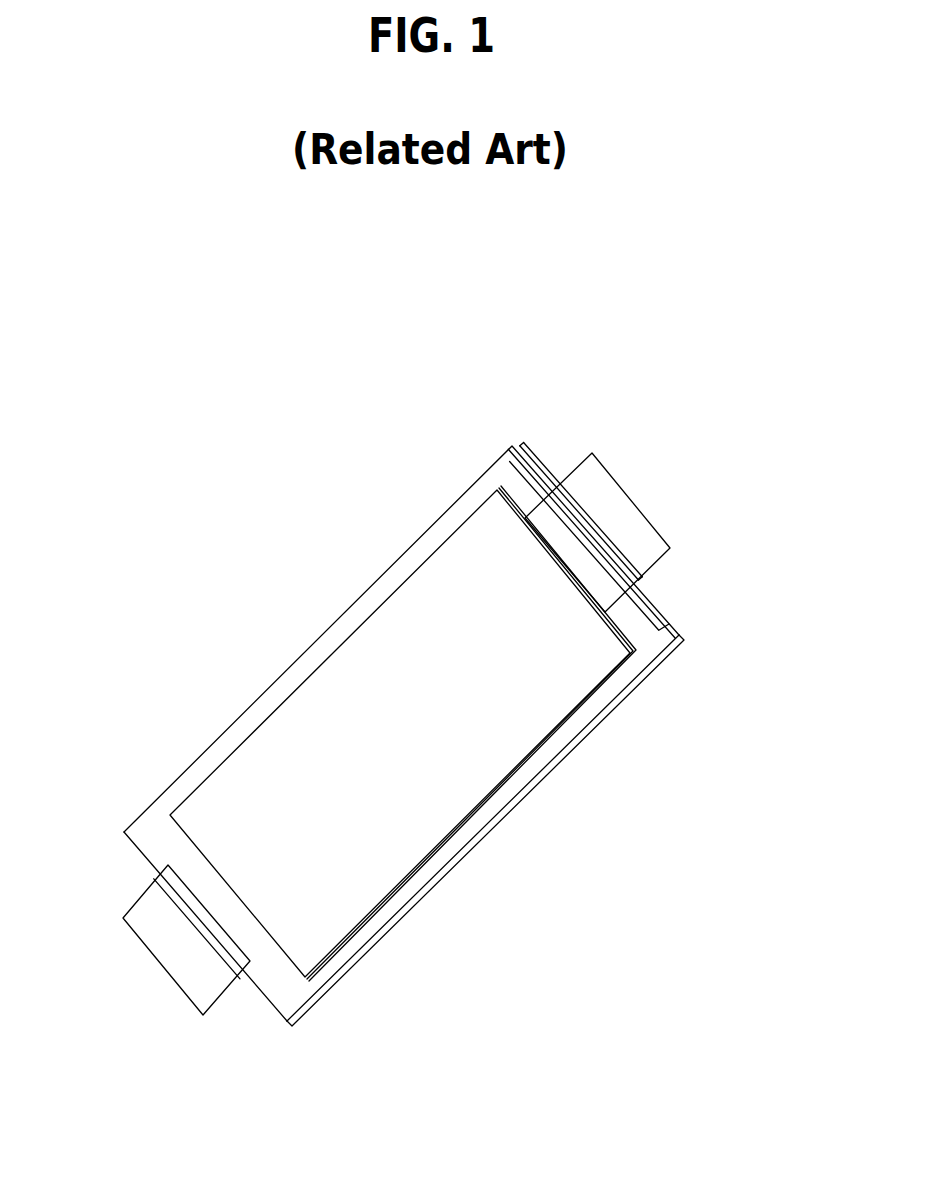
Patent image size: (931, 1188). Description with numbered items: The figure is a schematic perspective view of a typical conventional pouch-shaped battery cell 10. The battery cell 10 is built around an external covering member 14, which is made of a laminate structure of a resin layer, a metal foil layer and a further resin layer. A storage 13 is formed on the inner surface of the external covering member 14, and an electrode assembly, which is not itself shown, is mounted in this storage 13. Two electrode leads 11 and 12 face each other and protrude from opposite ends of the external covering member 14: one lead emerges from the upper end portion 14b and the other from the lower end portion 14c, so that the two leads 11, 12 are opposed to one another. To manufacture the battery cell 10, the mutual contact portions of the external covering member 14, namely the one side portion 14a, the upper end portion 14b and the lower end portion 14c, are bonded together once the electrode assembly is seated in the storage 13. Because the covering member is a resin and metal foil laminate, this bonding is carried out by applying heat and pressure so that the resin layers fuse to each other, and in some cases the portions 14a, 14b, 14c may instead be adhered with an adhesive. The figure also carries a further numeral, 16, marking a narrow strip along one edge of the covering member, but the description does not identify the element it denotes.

The pouch-shaped battery cell 10 is at (136, 452).
The electrode lead 11 is at (188, 965).
The electrode lead 12 is at (637, 507).
The storage 13 is at (346, 667).
The external covering member 14 is at (498, 455).
The one side portion 14a is at (153, 830).
The upper end portion 14b is at (500, 793).
The lower end portion 14c is at (657, 635).
The sealing portion 16 is at (555, 473).